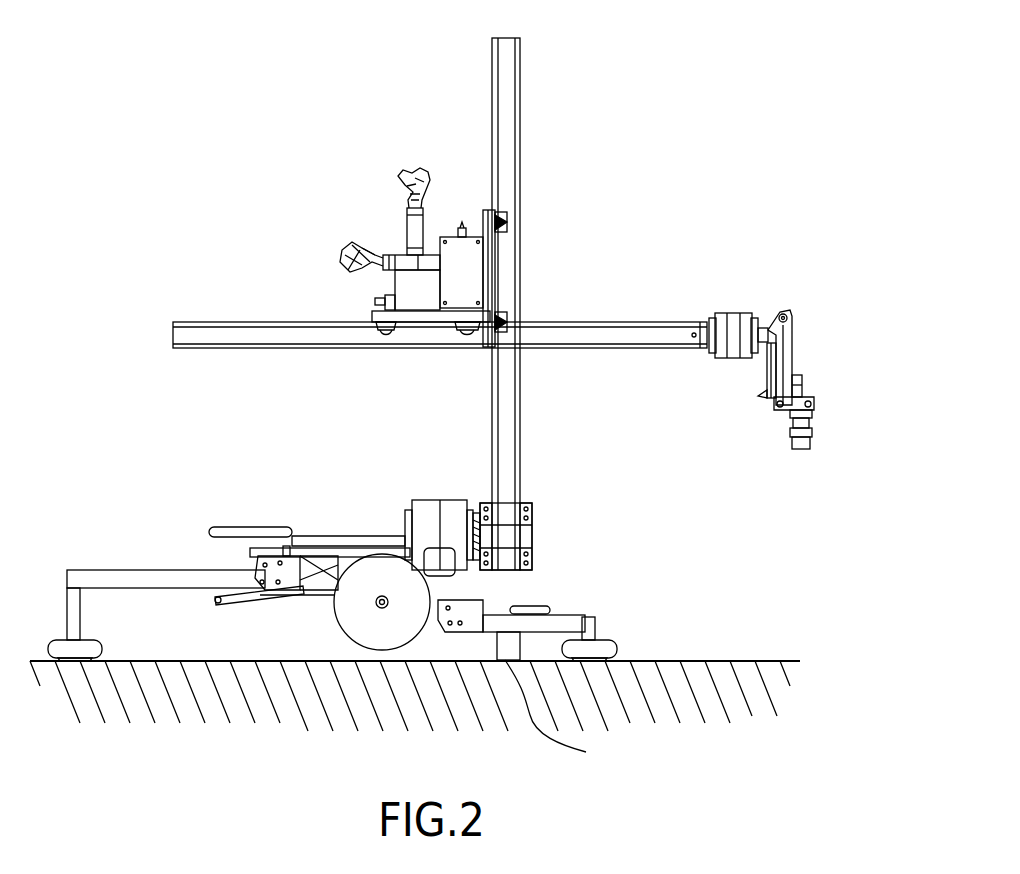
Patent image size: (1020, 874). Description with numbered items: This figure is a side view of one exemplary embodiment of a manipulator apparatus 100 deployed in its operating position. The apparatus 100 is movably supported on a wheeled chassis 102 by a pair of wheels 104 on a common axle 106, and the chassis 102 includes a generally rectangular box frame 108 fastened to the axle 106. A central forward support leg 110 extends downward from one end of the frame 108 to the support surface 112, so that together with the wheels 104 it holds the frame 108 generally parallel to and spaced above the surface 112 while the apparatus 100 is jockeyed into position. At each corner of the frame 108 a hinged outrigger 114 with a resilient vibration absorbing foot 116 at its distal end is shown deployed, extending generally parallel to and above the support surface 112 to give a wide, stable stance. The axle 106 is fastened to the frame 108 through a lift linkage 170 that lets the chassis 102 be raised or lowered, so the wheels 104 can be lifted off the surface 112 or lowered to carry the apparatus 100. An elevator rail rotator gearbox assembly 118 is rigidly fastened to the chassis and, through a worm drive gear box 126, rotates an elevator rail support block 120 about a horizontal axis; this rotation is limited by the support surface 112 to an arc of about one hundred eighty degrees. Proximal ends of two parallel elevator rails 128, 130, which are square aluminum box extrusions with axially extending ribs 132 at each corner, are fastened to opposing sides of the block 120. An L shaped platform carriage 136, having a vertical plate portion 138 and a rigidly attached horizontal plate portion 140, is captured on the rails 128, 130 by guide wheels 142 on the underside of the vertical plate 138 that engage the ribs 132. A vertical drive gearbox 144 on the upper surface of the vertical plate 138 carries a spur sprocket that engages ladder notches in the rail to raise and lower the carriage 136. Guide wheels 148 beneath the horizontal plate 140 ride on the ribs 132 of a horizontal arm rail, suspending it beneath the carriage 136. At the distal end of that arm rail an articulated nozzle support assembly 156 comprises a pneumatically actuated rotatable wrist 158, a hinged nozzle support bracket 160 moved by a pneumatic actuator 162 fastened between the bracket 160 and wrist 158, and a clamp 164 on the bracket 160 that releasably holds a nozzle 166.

The manipulator apparatus 100 is at (684, 164).
The wheeled chassis 102 is at (409, 482).
The wheels 104 is at (336, 612).
The common axle 106 is at (378, 608).
The rectangular box frame 108 is at (302, 527).
The central forward support leg 110 is at (565, 714).
The support surface 112 is at (748, 661).
The hinged outrigger 114 is at (107, 569).
The resilient vibration absorbing foot 116 is at (81, 592).
The elevator rail rotator gearbox assembly 118 is at (556, 510).
The elevator rail support block 120 is at (533, 540).
The worm drive gear box 126 is at (442, 500).
The elevator rail 128 is at (568, 304).
The elevator rail 130 is at (520, 119).
The axially extending ribs 132 is at (491, 68).
The L shaped platform carriage 136 is at (527, 277).
The vertical plate portion 138 is at (489, 249).
The horizontal plate portion 140 is at (405, 324).
The guide wheels 142 is at (507, 216).
The vertical drive gearbox 144 is at (449, 240).
The guide wheels 148 is at (380, 330).
The articulated nozzle support assembly 156 is at (791, 308).
The pneumatically actuated rotatable wrist 158 is at (735, 312).
The hinged nozzle support bracket 160 is at (792, 344).
The pneumatic actuator 162 is at (768, 370).
The clamp 164 is at (812, 397).
The nozzle 166 is at (789, 428).
The lift linkage 170 is at (215, 603).